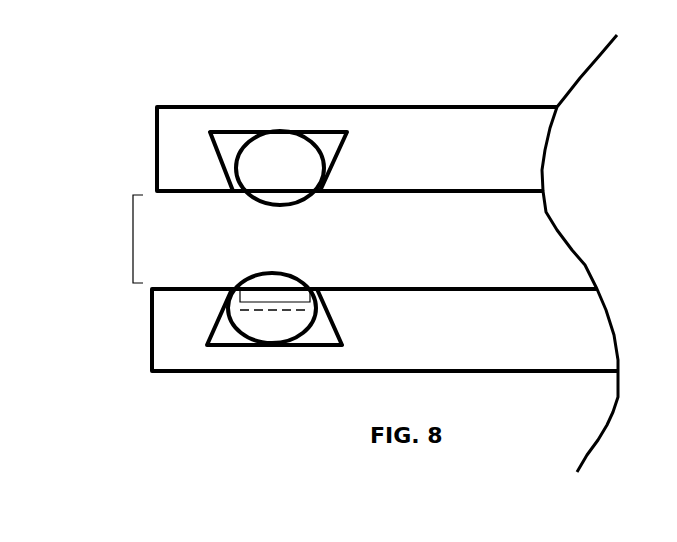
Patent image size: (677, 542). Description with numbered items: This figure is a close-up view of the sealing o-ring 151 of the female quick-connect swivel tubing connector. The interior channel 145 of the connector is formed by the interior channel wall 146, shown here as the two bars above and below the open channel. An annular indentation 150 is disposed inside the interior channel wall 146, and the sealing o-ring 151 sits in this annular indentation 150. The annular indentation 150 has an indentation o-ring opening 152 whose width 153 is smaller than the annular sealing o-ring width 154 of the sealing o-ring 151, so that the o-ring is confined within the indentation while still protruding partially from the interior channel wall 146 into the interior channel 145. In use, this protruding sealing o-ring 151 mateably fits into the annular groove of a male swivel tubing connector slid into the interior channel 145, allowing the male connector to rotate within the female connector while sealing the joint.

The interior channel 145 is at (133, 240).
The interior channel wall 146 is at (430, 290).
The annular indentation 150 is at (223, 333).
The sealing o-ring 151 is at (279, 169).
The indentation o-ring opening 152 is at (273, 288).
The width of indentation o-ring opening 153 is at (260, 300).
The annular sealing o-ring width 154 is at (278, 310).